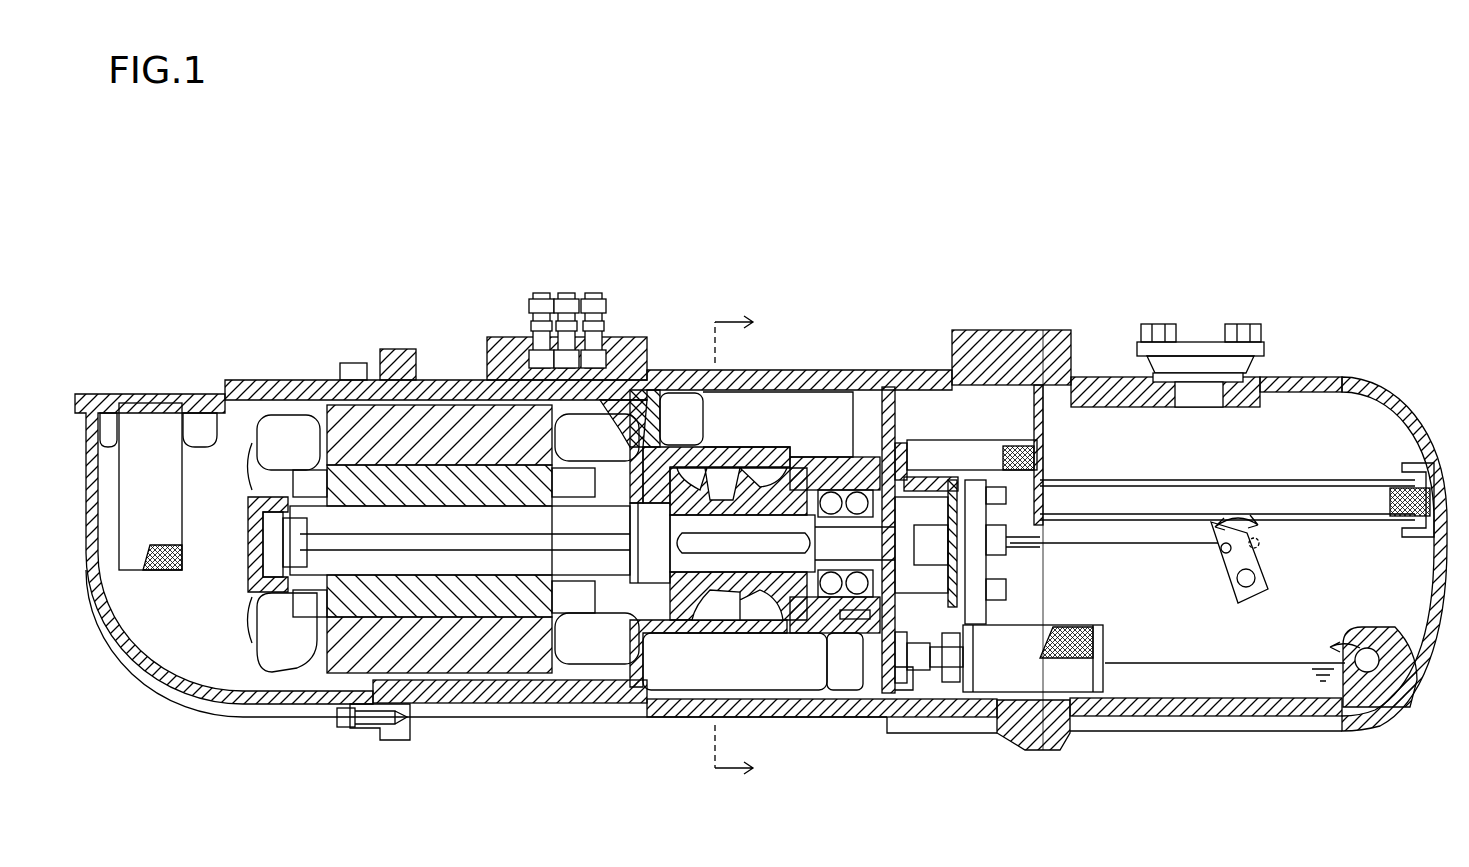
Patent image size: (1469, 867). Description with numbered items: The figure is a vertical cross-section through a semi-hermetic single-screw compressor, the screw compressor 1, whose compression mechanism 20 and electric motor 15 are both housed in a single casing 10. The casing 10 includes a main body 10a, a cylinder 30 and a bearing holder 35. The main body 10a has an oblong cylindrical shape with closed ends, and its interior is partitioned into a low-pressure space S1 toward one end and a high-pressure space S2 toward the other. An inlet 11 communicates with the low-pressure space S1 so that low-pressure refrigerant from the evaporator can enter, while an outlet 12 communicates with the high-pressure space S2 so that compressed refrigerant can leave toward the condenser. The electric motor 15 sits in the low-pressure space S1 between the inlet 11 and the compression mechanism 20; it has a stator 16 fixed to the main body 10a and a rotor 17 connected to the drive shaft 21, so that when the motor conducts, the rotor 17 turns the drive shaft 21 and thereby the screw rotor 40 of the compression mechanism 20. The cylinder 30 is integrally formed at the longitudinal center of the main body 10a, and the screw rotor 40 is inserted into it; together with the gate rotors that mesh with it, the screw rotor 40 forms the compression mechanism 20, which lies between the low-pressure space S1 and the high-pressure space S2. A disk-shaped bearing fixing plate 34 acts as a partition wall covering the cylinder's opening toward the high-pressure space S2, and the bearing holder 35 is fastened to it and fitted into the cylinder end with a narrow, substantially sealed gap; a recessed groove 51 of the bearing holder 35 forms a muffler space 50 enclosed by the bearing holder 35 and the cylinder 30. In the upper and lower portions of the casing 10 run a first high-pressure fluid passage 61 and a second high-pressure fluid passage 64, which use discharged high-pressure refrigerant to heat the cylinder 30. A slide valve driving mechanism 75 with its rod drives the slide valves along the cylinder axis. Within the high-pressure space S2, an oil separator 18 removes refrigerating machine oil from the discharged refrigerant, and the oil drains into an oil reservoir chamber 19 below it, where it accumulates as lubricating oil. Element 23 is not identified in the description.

The screw compressor 1 is at (298, 252).
The casing 10 is at (218, 382).
The main body 10a is at (872, 378).
The inlet 11 is at (150, 415).
The outlet 12 is at (1199, 397).
The electric motor 15 is at (300, 666).
The stator 16 is at (427, 650).
The rotor 17 is at (494, 594).
The oil separator 18 is at (1311, 501).
The oil reservoir chamber 19 is at (1380, 655).
The compression mechanism 20 is at (682, 437).
The drive shaft 21 is at (590, 676).
The compression rotor 23 is at (722, 608).
The cylinder 30 is at (762, 453).
The bearing fixing plate 34 is at (906, 456).
The bearing holder 35 is at (823, 462).
The screw rotor 40 is at (672, 600).
The muffler space 50 is at (886, 632).
The recessed groove 51 is at (864, 462).
The first high-pressure fluid passage 61 is at (777, 410).
The second high-pressure fluid passage 64 is at (684, 680).
The slide valve driving mechanism 75 is at (990, 610).
The low-pressure space S1 is at (250, 676).
The high-pressure space S2 is at (1370, 418).